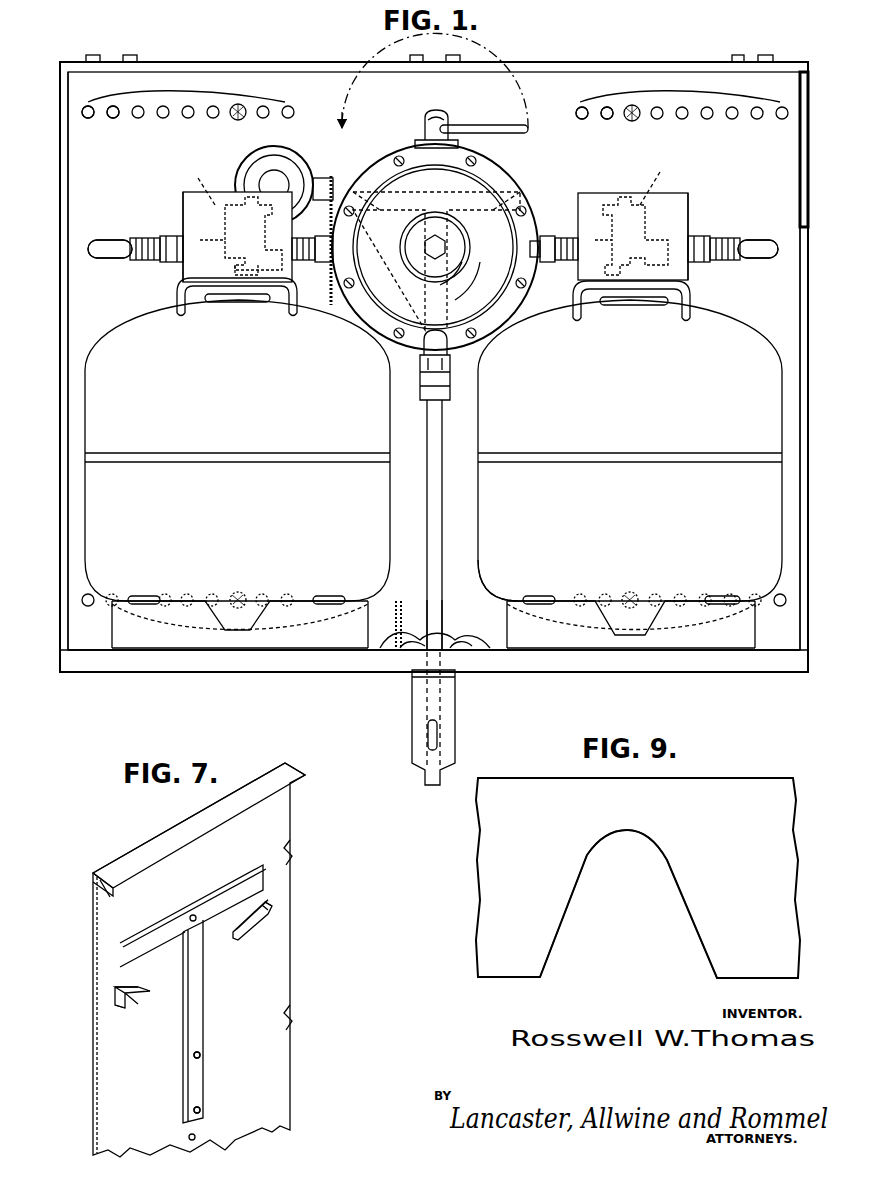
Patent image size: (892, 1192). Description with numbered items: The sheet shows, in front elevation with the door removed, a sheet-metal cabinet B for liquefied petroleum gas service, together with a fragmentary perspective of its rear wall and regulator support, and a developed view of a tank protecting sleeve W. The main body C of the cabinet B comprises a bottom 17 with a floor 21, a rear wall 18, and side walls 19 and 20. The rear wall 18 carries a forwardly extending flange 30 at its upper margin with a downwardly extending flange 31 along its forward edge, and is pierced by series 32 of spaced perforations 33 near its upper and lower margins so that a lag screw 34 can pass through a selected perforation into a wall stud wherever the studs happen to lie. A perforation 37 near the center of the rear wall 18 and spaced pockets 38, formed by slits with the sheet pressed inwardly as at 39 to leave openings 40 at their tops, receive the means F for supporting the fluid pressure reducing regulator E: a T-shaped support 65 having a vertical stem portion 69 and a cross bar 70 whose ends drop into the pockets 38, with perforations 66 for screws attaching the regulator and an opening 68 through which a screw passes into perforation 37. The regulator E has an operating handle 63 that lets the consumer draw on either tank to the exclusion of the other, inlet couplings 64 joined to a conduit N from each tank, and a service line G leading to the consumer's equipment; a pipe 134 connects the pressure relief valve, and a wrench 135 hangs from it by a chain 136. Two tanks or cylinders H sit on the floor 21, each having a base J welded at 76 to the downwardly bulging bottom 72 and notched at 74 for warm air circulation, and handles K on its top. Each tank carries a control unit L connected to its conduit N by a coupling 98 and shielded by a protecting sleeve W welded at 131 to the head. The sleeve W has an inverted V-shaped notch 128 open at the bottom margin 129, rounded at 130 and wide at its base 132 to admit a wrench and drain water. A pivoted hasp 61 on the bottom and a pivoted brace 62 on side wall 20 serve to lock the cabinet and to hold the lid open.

In FIG. 1, the bottom 17 is at (592, 665).
In FIG. 1, the rear wall 18 is at (68, 530).
In FIG. 7, the rear wall 18 is at (282, 820).
In FIG. 1, the side wall 19 is at (62, 575).
In FIG. 1, the side wall 20 is at (805, 600).
In FIG. 1, the floor 21 is at (495, 648).
In FIG. 7, the forwardly extending flange 30 is at (128, 862).
In FIG. 7, the downwardly extending flange 31 is at (108, 893).
In FIG. 1, the series of perforations 32 is at (812, 566).
In FIG. 1, the perforations 33 is at (90, 118).
In FIG. 1, the lag screw 34 is at (230, 118).
In FIG. 7, the perforation 37 is at (196, 1137).
In FIG. 7, the pockets 38 is at (270, 914).
In FIG. 7, the pressed-in sheet metal 39 is at (275, 904).
In FIG. 7, the openings 40 is at (268, 900).
In FIG. 1, the pivoted hasp 61 is at (455, 722).
In FIG. 1, the pivoted brace 62 is at (800, 152).
In FIG. 1, the operating handle 63 is at (478, 125).
In FIG. 1, the inlet couplings 64 is at (312, 262).
In FIG. 7, the support 65 is at (205, 970).
In FIG. 7, the perforations 66 is at (193, 915).
In FIG. 7, the opening 68 is at (202, 1108).
In FIG. 7, the vertical stem portion 69 is at (202, 1068).
In FIG. 7, the cross bar 70 is at (243, 882).
In FIG. 1, the concavo-convex bottom 72 is at (165, 634).
In FIG. 1, the notches 74 is at (617, 597).
In FIG. 1, the welding 76 is at (150, 594).
In FIG. 1, the coupling 98 is at (130, 254).
In FIG. 1, the inverted V-shaped notch 128 is at (183, 232).
In FIG. 9, the inverted V-shaped notch 128 is at (560, 930).
In FIG. 9, the bottom margin 129 is at (500, 978).
In FIG. 9, the rounded portion 130 is at (633, 845).
In FIG. 1, the weld 131 is at (222, 302).
In FIG. 9, the base of notch 132 is at (712, 975).
In FIG. 1, the pipe 134 is at (333, 176).
In FIG. 1, the wrench 135 is at (480, 612).
In FIG. 1, the chain 136 is at (400, 605).
In FIG. 1, the cabinet B is at (60, 672).
In FIG. 1, the main body C is at (68, 490).
In FIG. 1, the fluid pressure reducing regulator E is at (468, 182).
In FIG. 7, the means for securing regulator F is at (207, 925).
In FIG. 1, the service line G is at (444, 600).
In FIG. 1, the tank or cylinder H is at (485, 522).
In FIG. 1, the base J is at (340, 640).
In FIG. 1, the control unit L is at (421, 175).
In FIG. 1, the conduit N is at (125, 248).
In FIG. 1, the protecting sleeve W is at (183, 202).
In FIG. 9, the protecting sleeve W is at (488, 858).